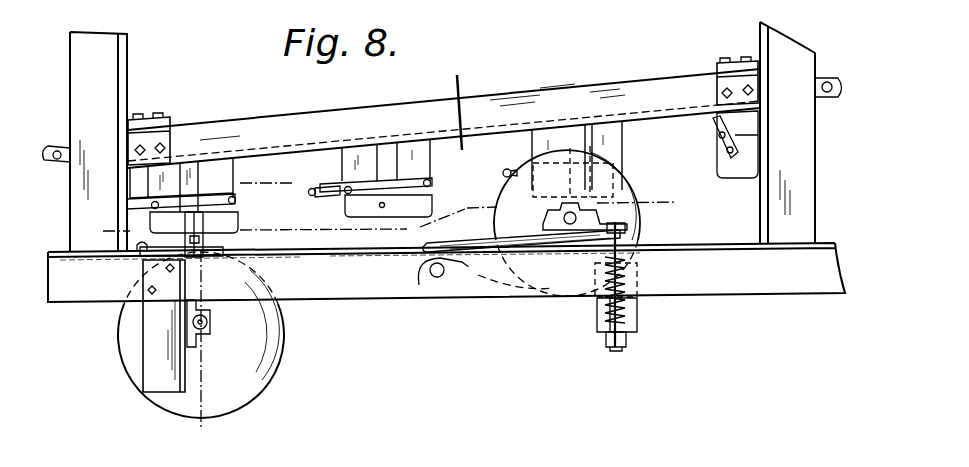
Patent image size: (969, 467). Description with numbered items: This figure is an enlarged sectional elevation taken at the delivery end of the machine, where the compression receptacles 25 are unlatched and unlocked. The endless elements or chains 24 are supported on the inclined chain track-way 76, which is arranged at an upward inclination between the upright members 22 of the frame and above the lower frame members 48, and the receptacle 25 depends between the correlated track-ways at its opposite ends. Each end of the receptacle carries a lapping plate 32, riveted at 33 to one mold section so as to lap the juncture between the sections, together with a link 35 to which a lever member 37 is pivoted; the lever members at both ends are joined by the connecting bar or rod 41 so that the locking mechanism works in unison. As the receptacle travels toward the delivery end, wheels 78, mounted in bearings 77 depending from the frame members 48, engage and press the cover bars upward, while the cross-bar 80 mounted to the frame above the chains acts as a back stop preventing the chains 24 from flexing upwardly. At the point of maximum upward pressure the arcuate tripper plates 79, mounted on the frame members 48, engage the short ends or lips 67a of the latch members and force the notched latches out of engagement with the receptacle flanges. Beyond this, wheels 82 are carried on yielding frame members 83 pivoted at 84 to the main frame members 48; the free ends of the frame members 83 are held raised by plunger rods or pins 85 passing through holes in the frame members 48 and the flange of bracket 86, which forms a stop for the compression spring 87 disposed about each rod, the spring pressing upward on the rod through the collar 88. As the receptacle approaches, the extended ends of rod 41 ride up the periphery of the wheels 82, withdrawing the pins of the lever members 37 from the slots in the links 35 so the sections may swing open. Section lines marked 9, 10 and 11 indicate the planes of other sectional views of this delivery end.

The section line 9- 9 is at (97, 213).
The section line 10- 10 is at (266, 179).
The section line 11- 11 is at (453, 71).
The upright standard 22 is at (80, 91).
The endless elements or chains 24 is at (843, 69).
The receptacle 25 is at (630, 150).
The lapping plate 32 is at (390, 205).
The rivet 33 is at (382, 207).
The link 35 is at (431, 186).
The lever member 37 is at (322, 189).
The connecting bar or rod 41 is at (309, 195).
The lower frame members 48 is at (700, 297).
The short ends or lips of the latch members 67a is at (205, 260).
The chain track-way 76 is at (380, 113).
The bearings 77 is at (190, 322).
The wheels 78 is at (259, 383).
The arcuate tripper plates 79 is at (140, 244).
The cross-bar 80 is at (167, 118).
The wheels 82 is at (628, 200).
The yielding frame members 83 is at (488, 230).
The pivot 84 is at (438, 283).
The plunger rods or pins 85 is at (612, 234).
The bracket 86 is at (598, 333).
The compression spring 87 is at (600, 316).
The collars 88 is at (631, 256).